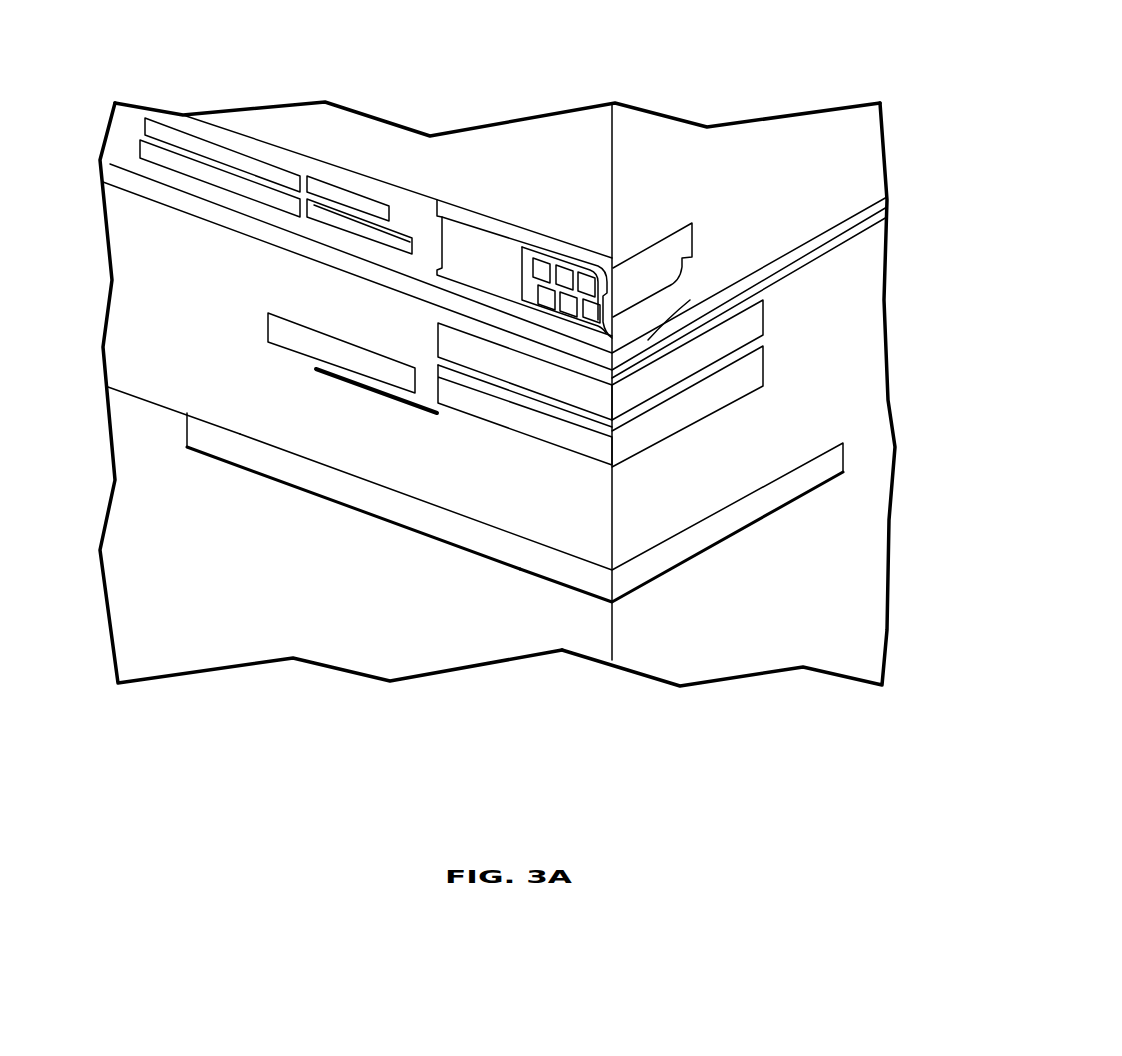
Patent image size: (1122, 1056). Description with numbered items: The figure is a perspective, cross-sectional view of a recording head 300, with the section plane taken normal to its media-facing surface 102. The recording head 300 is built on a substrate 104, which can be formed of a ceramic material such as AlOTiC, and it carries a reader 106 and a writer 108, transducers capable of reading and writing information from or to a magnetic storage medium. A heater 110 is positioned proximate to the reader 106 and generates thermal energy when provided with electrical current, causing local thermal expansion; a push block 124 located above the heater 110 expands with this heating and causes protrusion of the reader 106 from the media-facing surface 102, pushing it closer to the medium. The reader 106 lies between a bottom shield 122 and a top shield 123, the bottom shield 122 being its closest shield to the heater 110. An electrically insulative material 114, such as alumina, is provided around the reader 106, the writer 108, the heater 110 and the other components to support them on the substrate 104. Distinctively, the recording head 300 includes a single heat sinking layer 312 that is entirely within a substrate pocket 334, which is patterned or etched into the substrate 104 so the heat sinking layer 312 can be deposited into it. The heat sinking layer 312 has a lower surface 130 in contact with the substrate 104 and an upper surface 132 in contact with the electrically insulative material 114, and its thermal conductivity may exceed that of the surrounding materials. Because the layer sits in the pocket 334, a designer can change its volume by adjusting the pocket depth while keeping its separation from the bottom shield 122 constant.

The recording head 300 is at (822, 82).
The media-facing surface 102 is at (711, 620).
The substrate 104 is at (172, 640).
The reader 106 is at (633, 440).
The writer 108 is at (697, 283).
The heater 110 is at (400, 405).
The electrically insulative material 114 is at (128, 227).
The bottom shield 122 is at (590, 457).
The top shield 123 is at (590, 433).
The push block 124 is at (290, 334).
The lower surface 130 is at (498, 562).
The upper surface 132 is at (232, 437).
The heat sinking layer 312 is at (557, 560).
The substrate pocket 334 is at (581, 592).